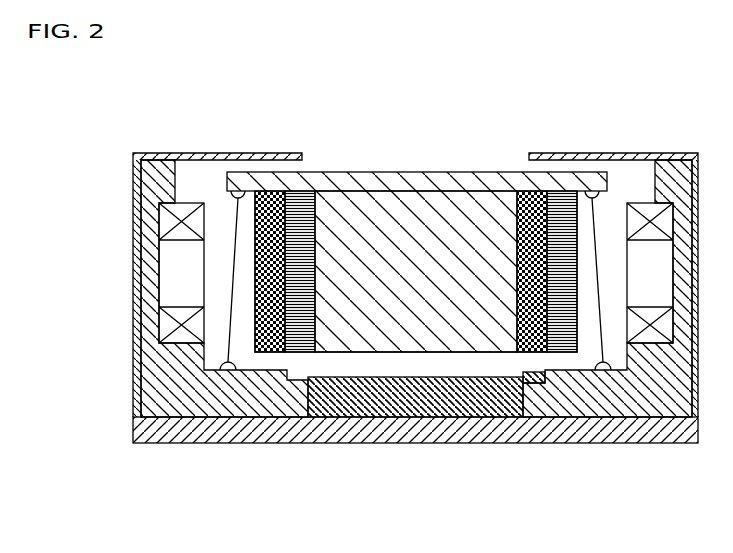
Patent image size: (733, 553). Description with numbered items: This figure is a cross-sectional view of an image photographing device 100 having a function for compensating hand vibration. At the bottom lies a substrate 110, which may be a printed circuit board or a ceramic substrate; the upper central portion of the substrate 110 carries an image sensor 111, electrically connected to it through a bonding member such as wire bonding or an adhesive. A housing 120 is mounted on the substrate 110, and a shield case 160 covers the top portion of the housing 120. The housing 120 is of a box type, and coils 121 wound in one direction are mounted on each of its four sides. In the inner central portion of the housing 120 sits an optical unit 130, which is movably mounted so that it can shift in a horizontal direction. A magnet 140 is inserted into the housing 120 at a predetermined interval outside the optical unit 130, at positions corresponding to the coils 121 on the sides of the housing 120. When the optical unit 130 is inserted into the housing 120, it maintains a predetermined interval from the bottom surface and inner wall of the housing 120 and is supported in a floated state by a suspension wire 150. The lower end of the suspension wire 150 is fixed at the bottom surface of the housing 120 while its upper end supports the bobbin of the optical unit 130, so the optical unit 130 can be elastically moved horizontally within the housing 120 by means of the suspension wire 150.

The image photographing device 100 is at (48, 82).
The substrate 110 is at (275, 443).
The image sensor 111 is at (421, 440).
The housing 120 is at (620, 407).
The coils 121 is at (172, 280).
The optical unit 130 is at (405, 192).
The magnet 140 is at (273, 192).
The suspension wire 150 is at (237, 227).
The shield case 160 is at (623, 153).